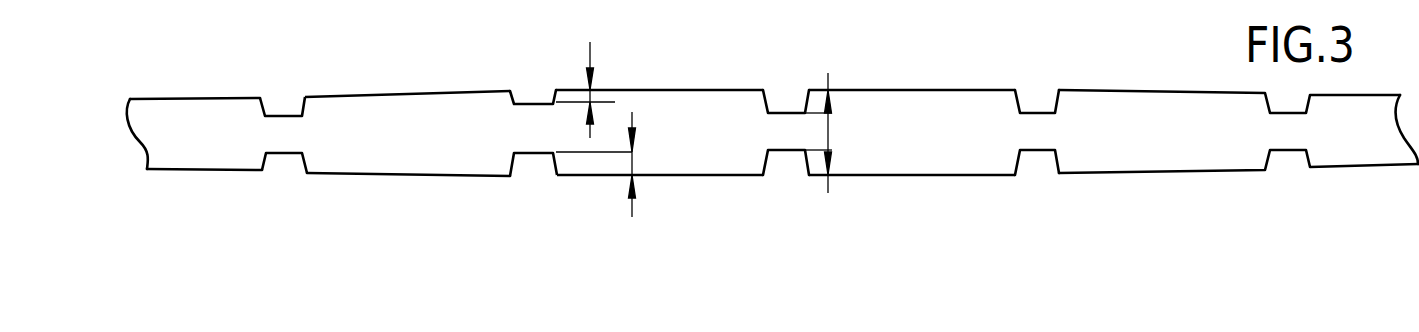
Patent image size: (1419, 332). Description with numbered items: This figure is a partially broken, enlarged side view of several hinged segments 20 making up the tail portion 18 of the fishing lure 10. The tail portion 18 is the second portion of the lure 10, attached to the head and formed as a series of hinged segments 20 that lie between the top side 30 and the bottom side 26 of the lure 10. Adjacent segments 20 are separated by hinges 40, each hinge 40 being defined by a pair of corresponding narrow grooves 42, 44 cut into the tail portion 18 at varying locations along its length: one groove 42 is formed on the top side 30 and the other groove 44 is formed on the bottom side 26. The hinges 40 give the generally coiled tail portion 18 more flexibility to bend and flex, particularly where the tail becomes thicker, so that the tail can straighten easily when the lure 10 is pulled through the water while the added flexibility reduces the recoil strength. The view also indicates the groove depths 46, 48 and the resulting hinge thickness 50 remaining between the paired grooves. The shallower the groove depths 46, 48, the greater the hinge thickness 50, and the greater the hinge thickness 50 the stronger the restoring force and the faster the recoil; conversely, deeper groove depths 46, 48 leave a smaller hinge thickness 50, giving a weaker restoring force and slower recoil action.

The fishing lure 10 is at (1073, 65).
The tail portion 18 is at (972, 88).
The hinged segments 20 is at (405, 93).
The bottom side 26 is at (698, 177).
The top side 30 is at (692, 90).
The hinges 40 is at (522, 138).
The groove 42 is at (285, 101).
The groove 44 is at (287, 165).
The groove depth 46 is at (595, 101).
The groove depth 48 is at (632, 165).
The hinge thickness 50 is at (830, 135).